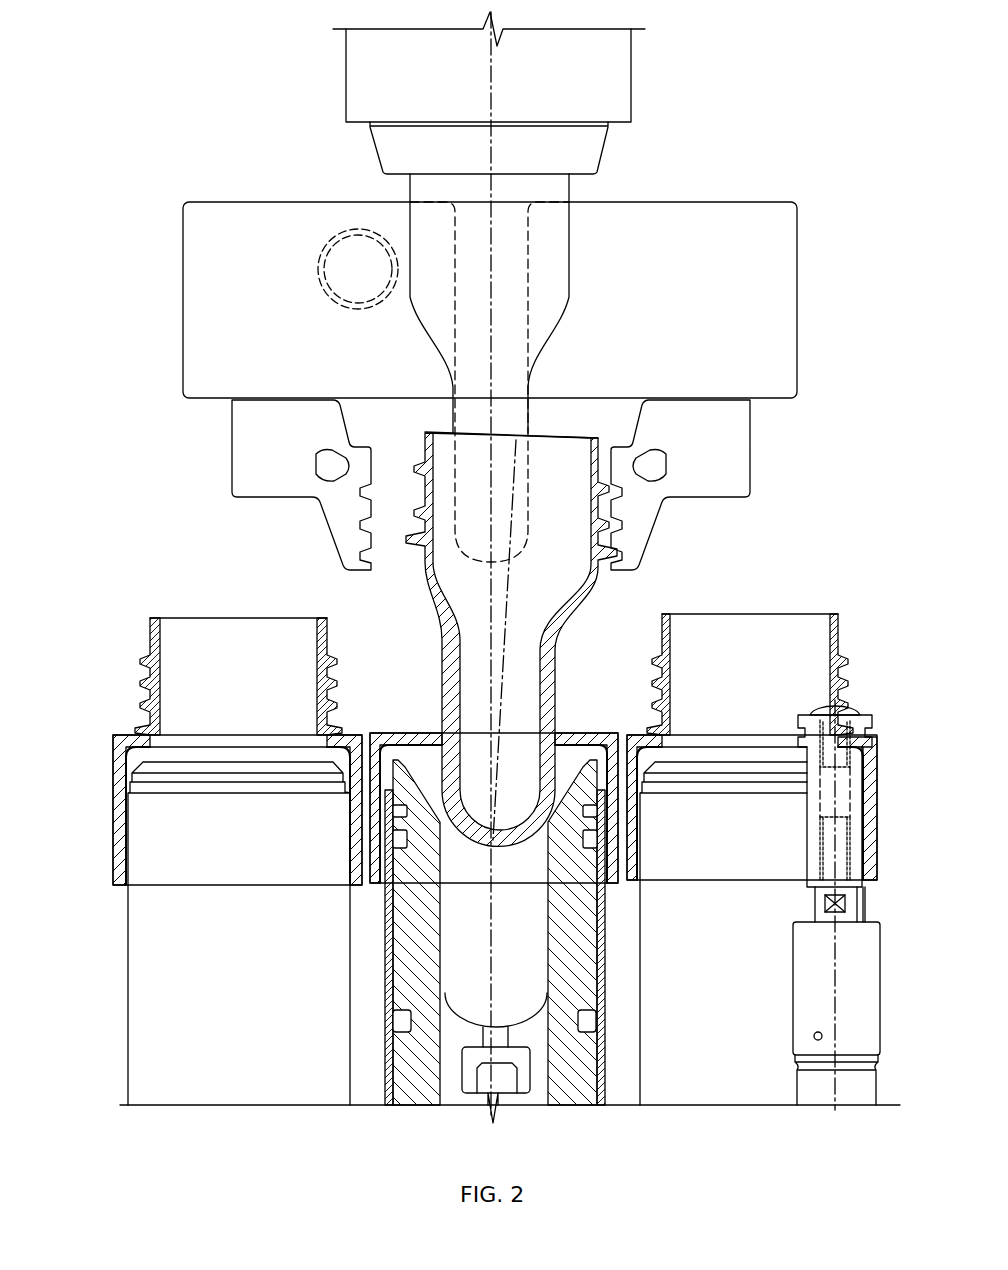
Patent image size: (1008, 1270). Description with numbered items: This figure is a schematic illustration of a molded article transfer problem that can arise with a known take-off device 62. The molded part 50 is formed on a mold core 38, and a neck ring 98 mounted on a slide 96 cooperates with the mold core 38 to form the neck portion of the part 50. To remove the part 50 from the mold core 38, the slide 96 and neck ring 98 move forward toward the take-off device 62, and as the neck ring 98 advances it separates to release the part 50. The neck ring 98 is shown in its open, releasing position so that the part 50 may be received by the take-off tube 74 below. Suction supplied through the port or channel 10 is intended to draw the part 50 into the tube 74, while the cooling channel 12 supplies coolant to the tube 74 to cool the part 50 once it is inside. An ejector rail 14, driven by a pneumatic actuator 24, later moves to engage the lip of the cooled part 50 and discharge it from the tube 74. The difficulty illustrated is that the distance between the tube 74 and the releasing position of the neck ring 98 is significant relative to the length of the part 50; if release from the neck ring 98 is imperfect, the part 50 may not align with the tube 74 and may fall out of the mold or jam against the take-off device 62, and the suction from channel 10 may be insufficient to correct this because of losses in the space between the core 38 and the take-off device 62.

The port 10 is at (522, 1057).
The cooling channel 12 is at (585, 1018).
The ejector rail 14 is at (593, 733).
The pneumatic actuator 24 is at (808, 950).
The mold core 38 is at (553, 188).
The molded part 50 is at (565, 652).
The take-off device 62 is at (85, 667).
The take-off tube 74 is at (590, 930).
The slide 96 is at (745, 218).
The neck ring 98 is at (735, 435).